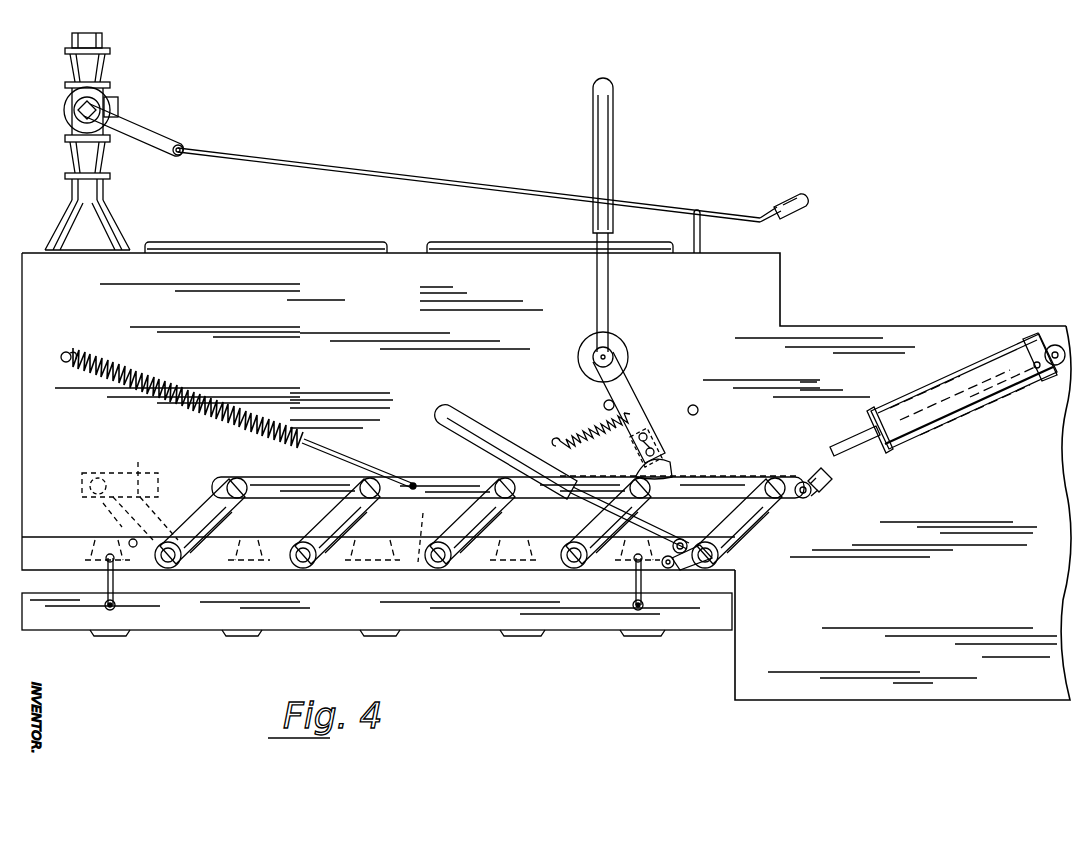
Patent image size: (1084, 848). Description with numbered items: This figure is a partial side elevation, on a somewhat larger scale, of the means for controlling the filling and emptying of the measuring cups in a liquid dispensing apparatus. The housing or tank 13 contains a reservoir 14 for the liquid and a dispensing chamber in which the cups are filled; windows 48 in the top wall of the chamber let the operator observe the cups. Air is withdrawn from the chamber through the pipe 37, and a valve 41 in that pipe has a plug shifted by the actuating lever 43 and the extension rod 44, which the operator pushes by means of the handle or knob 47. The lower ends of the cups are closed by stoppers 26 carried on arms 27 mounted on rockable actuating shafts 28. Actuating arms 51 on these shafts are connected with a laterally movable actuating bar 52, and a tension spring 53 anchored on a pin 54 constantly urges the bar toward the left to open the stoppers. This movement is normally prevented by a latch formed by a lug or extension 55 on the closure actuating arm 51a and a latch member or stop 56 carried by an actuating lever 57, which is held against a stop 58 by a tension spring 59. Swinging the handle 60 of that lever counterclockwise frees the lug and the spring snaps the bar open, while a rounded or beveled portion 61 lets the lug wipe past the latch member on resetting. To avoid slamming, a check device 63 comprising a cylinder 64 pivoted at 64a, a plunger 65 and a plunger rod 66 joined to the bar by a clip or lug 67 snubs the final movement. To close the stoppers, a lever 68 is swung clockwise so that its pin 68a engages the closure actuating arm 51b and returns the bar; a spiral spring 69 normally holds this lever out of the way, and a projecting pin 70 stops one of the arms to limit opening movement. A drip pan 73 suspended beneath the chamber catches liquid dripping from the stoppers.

The housing or tank 13 is at (388, 270).
The reservoir 14 is at (1030, 688).
The stoppers 26 is at (390, 540).
The arms 27 is at (424, 532).
The actuating shafts 28 is at (575, 565).
The pipe 37 is at (66, 187).
The valve 41 is at (66, 114).
The actuating lever 43 is at (156, 144).
The extension rod 44 is at (327, 165).
The handle or knob 47 is at (790, 199).
The windows 48 is at (280, 242).
The actuating arms 51 is at (113, 505).
The closure actuating arm 51a is at (595, 538).
The closure actuating arm 51b is at (760, 518).
The actuating bar 52 is at (447, 485).
The tension spring 53 is at (180, 388).
The pin 54 is at (67, 350).
The lug or extension 55 is at (668, 465).
The latch member or stop 56 is at (660, 446).
The actuating lever 57 is at (640, 397).
The stop 58 is at (604, 404).
The tension spring 59 is at (568, 440).
The handle 60 is at (606, 160).
The rounded or beveled portion 61 is at (668, 468).
The check device 63 is at (940, 384).
The cylinder 64 is at (950, 428).
The pivot 64a is at (1058, 365).
The plunger 65 is at (1010, 363).
The plunger rod 66 is at (855, 463).
The clip or lug 67 is at (814, 496).
The lever 68 is at (462, 410).
The pin 68a is at (683, 541).
The spiral spring 69 is at (680, 568).
The projecting pin 70 is at (176, 538).
The drip pan 73 is at (162, 627).